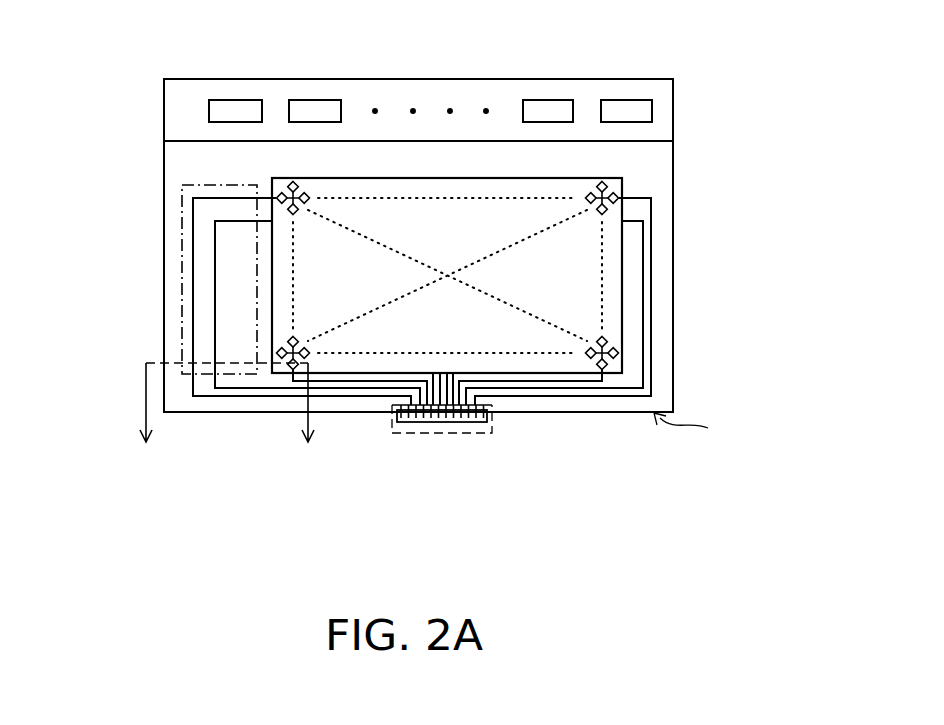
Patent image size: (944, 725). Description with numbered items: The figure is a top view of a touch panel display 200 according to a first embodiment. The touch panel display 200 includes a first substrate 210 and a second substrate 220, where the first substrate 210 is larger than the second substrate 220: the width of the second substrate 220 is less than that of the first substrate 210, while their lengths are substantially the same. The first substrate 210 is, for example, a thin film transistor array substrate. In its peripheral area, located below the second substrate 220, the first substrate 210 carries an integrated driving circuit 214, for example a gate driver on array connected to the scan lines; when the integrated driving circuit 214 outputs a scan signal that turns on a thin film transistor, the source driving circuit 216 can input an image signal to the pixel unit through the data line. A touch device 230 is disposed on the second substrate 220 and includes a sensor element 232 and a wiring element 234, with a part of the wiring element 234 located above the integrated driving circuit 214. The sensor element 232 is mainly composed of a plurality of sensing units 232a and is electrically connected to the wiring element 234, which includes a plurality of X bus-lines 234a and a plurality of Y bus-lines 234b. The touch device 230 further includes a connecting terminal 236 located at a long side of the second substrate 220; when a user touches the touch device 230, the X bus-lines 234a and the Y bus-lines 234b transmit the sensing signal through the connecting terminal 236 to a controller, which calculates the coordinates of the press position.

The touch panel display 200 is at (423, 300).
The first substrate 210 is at (674, 113).
The source driving circuit 216 is at (232, 108).
The second substrate 220 is at (650, 162).
The integrated driving circuit 214 is at (182, 270).
The touch device 230 is at (454, 372).
The sensor element 232 is at (617, 397).
The sensing units 232a is at (618, 353).
The wiring element 234 is at (413, 356).
The X bus-lines 234a is at (457, 393).
The Y bus-lines 234b is at (219, 397).
The connecting terminal 236 is at (442, 456).